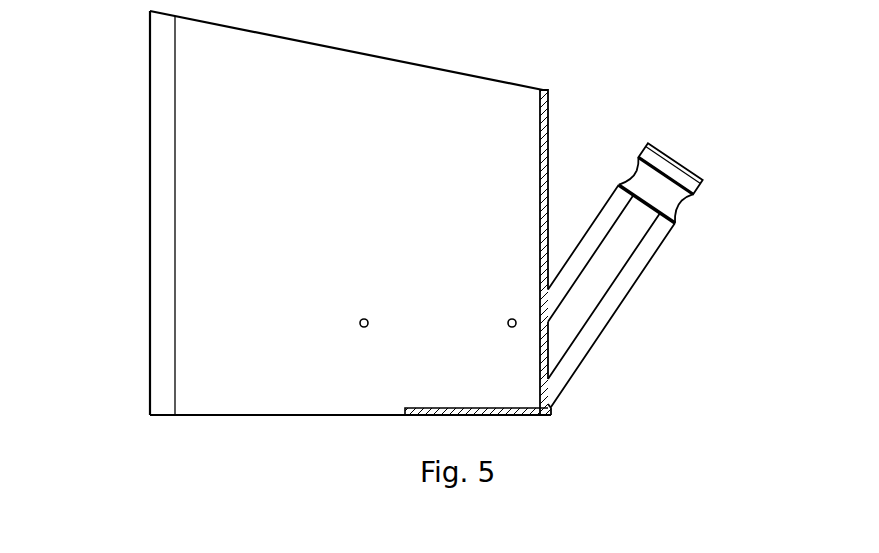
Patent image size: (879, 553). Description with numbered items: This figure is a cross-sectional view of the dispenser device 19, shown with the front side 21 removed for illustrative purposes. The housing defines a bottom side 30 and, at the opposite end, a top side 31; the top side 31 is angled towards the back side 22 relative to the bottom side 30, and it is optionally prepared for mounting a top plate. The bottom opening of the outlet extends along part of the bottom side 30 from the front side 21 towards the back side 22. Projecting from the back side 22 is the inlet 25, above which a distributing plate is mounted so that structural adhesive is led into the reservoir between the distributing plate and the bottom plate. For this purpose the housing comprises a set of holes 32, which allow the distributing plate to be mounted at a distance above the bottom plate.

The dispenser device 19 is at (124, 143).
The front side 21 is at (143, 233).
The back side 22 is at (555, 154).
The inlet 25 is at (626, 298).
The bottom side 30 is at (215, 421).
The top side 31 is at (471, 74).
The set of holes 32 is at (500, 325).